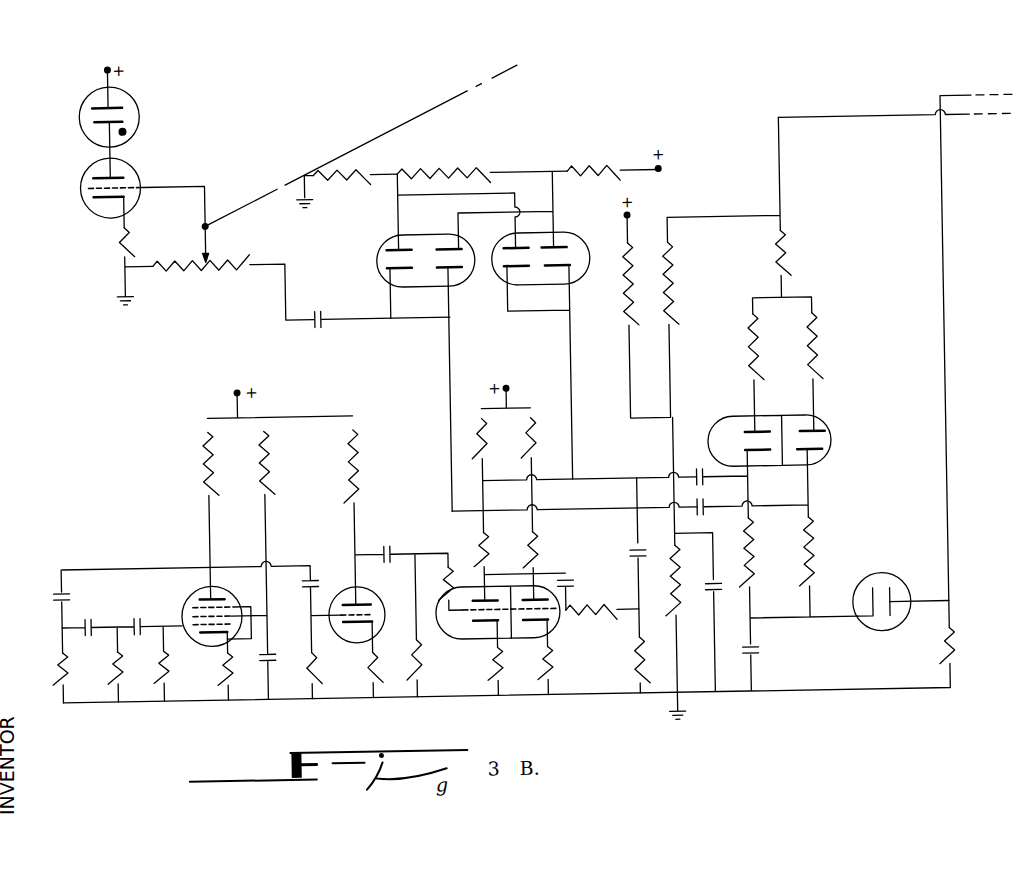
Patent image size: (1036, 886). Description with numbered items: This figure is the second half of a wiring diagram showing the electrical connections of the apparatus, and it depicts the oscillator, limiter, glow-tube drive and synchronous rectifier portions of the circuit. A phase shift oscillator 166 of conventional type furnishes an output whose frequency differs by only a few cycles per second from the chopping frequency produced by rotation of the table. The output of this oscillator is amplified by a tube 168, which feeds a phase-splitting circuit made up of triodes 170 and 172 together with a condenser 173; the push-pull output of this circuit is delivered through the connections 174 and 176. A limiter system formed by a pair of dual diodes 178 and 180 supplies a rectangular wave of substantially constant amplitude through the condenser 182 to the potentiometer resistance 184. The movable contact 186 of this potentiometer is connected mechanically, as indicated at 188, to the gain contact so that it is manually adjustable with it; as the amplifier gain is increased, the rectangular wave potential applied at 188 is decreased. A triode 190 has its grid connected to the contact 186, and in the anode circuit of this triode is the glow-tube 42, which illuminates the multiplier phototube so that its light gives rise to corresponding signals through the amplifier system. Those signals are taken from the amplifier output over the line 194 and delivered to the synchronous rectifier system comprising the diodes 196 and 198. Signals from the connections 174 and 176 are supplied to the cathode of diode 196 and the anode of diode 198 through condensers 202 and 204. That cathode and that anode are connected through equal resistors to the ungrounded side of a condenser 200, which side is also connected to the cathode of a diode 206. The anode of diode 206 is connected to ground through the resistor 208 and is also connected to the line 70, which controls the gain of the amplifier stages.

The glow-tube 42 is at (144, 106).
The triode 190 is at (82, 191).
The movable contact 186 is at (206, 248).
The potentiometer resistance 184 is at (233, 253).
The mechanical connection 188 is at (419, 115).
The condenser 182 is at (329, 322).
The dual diode 180 is at (380, 247).
The dual diode 178 is at (581, 245).
The line 194 is at (879, 119).
The line 70 is at (946, 355).
The phase shift oscillator 166 is at (196, 556).
The tube 168 is at (349, 650).
The triode 170 is at (469, 617).
The triode 172 is at (548, 619).
The condenser 173 is at (568, 581).
The connection 174 is at (548, 481).
The connection 176 is at (554, 513).
The diode 196 is at (738, 437).
The diode 198 is at (820, 435).
The condenser 202 is at (705, 476).
The condenser 204 is at (696, 515).
The diode 206 is at (860, 579).
The condenser 200 is at (753, 654).
The resistor 208 is at (955, 651).